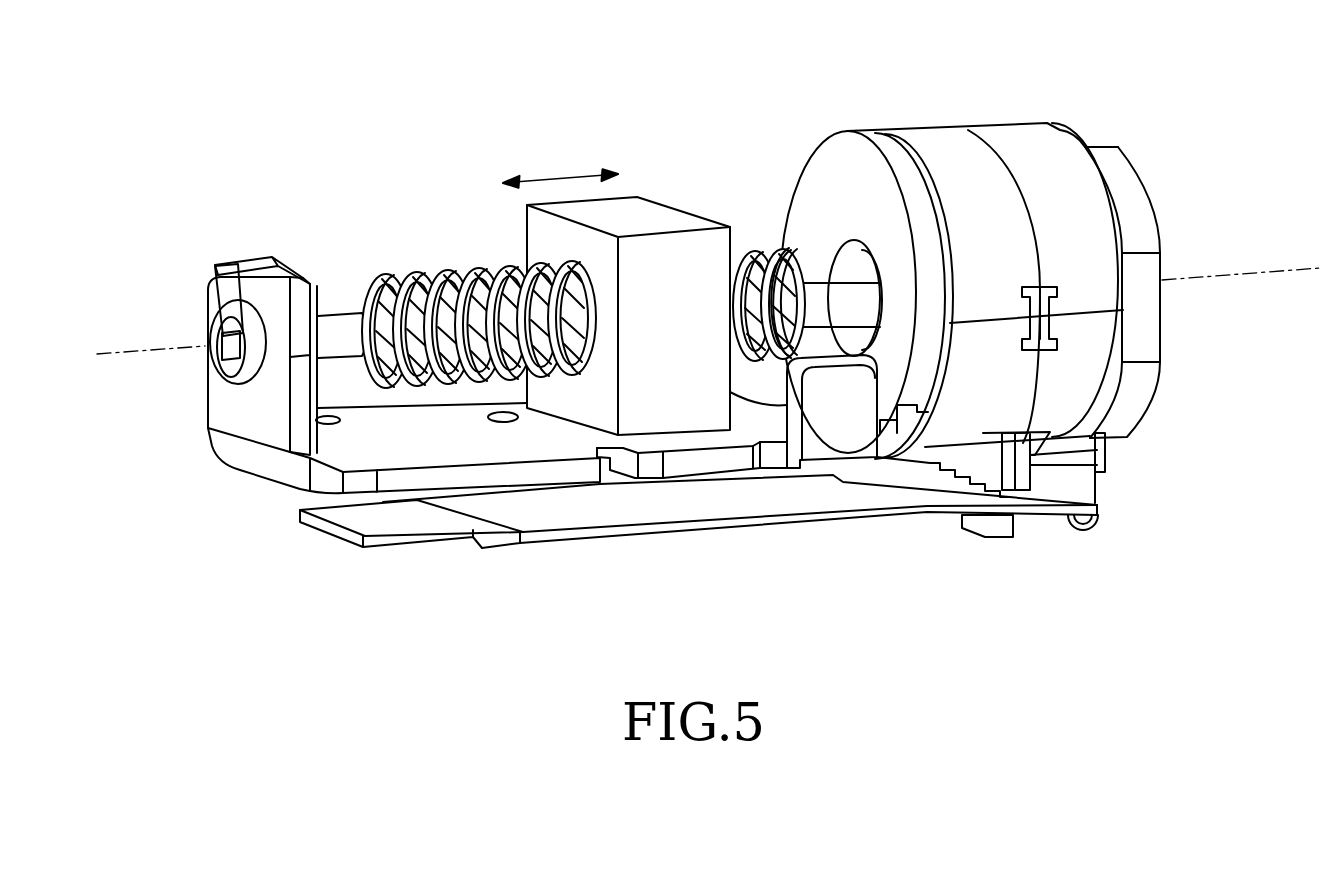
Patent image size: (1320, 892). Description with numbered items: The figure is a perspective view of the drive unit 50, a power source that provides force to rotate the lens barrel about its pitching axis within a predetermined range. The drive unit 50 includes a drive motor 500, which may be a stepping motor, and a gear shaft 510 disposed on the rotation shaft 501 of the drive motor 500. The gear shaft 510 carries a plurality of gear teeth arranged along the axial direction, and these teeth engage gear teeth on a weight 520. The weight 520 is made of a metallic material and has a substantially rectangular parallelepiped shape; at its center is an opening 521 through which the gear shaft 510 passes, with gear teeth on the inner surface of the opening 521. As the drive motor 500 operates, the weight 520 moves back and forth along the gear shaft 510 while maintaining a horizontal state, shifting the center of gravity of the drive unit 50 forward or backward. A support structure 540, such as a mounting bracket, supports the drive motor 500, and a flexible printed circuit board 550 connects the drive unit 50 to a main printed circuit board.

The drive unit 50 is at (1160, 154).
The drive motor 500 is at (943, 150).
The rotation shaft 501 is at (333, 322).
The gear shaft 510 is at (433, 285).
The weight 520 is at (690, 412).
The opening 521 is at (572, 383).
The support structure 540 is at (438, 447).
The flexible printed circuit board 550 is at (797, 498).